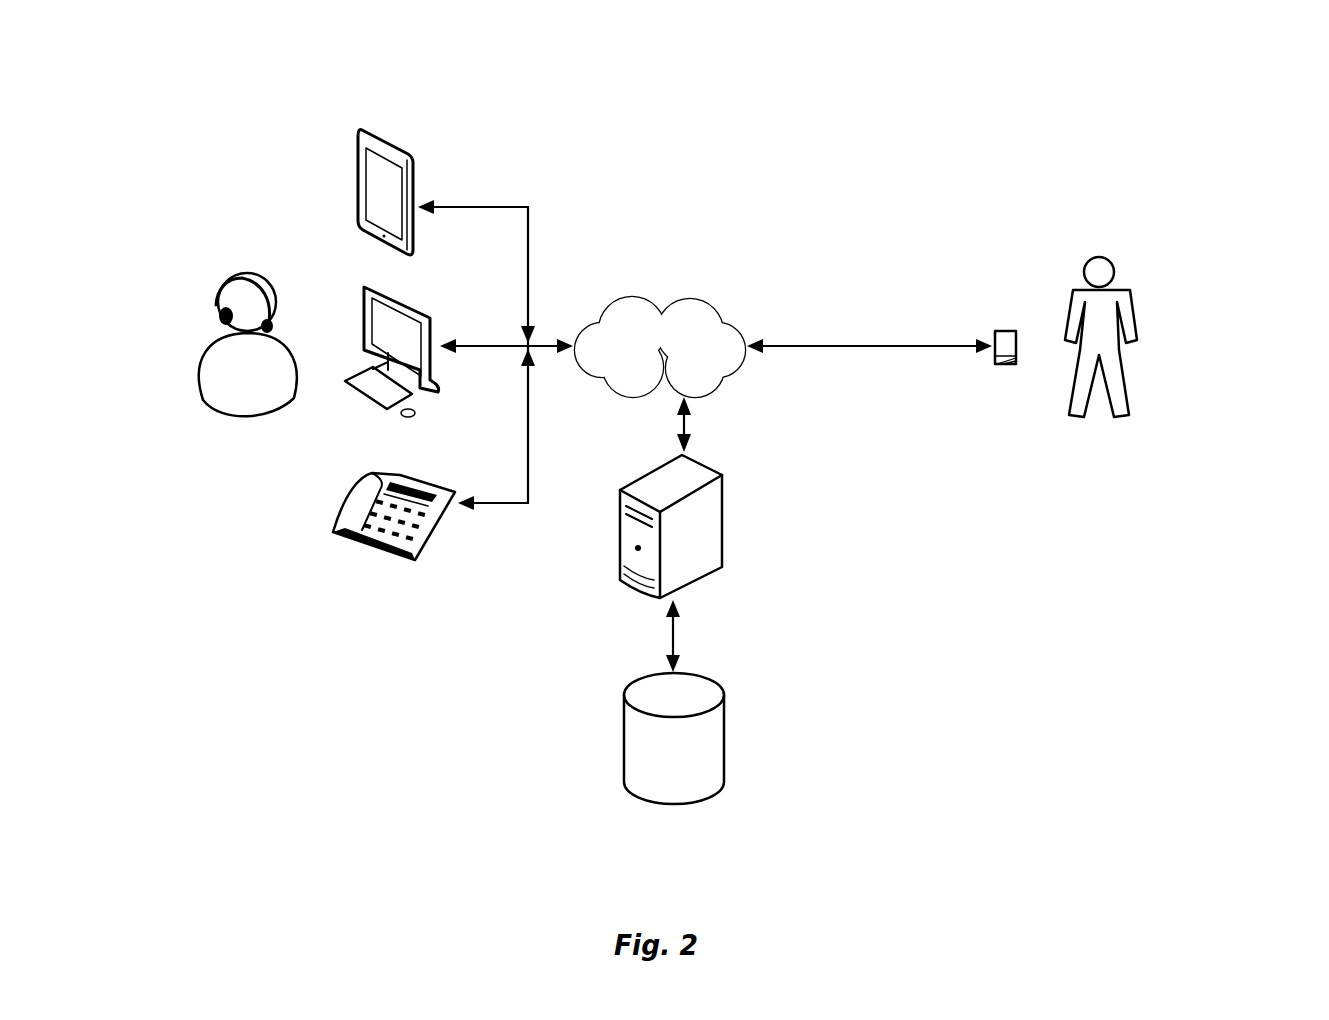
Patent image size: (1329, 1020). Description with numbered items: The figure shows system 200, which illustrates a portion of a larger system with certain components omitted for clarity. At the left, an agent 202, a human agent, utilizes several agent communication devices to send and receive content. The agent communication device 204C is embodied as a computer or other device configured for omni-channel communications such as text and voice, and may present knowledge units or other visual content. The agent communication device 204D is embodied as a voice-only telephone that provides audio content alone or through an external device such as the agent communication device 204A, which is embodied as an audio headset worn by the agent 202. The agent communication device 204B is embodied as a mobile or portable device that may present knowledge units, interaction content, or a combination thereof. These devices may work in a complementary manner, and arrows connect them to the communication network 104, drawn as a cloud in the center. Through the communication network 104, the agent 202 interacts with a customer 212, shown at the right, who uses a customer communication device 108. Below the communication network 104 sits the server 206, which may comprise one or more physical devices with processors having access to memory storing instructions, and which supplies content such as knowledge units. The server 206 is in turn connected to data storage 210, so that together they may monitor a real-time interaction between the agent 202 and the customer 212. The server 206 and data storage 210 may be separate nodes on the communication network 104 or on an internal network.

The system 200 is at (1248, 82).
The agent 202 is at (230, 384).
The agent communication device 204A is at (226, 322).
The agent communication device 204B is at (413, 157).
The agent communication device 204C is at (418, 308).
The agent communication device 204D is at (424, 537).
The communication network 104 is at (689, 300).
The customer communication device 108 is at (995, 331).
The customer 212 is at (1131, 300).
The server 206 is at (722, 520).
The data storage 210 is at (723, 722).